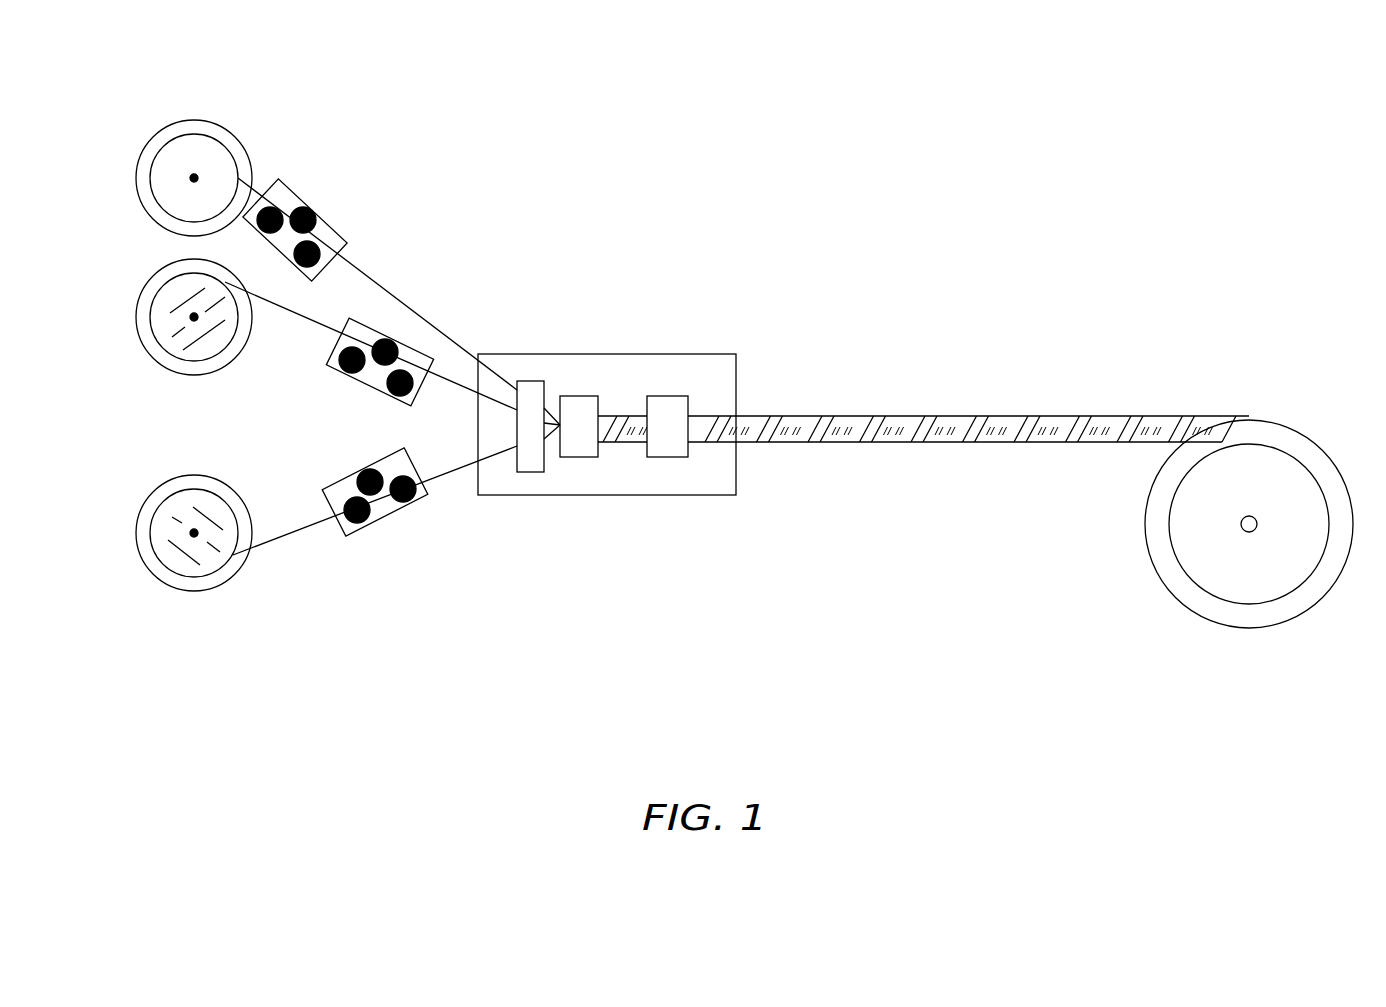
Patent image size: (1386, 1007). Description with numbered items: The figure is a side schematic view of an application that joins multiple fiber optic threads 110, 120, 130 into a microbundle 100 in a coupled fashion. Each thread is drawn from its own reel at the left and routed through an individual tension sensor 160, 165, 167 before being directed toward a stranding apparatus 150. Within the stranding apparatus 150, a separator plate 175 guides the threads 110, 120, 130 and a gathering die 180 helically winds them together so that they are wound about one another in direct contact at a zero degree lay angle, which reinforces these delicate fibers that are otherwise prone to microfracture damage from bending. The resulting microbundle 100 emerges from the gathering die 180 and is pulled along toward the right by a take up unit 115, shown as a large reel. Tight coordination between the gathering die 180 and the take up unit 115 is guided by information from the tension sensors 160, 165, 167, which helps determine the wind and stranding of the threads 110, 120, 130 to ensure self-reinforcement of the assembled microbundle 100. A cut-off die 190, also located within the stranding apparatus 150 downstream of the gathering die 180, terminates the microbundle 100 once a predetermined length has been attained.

The microbundle 100 is at (1158, 336).
The fiber optic thread 110 is at (162, 115).
The take up unit 115 is at (1216, 646).
The fiber optic thread 120 is at (150, 372).
The fiber optic thread 130 is at (151, 592).
The stranding apparatus 150 is at (596, 333).
The tension sensor 160 is at (303, 203).
The tension sensor 165 is at (352, 382).
The tension sensor 167 is at (387, 517).
The separator plate 175 is at (527, 472).
The gathering die 180 is at (570, 457).
The cut-off die 190 is at (662, 457).